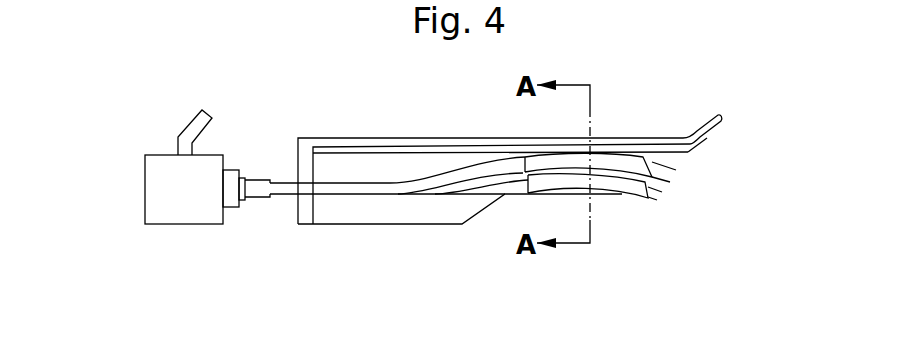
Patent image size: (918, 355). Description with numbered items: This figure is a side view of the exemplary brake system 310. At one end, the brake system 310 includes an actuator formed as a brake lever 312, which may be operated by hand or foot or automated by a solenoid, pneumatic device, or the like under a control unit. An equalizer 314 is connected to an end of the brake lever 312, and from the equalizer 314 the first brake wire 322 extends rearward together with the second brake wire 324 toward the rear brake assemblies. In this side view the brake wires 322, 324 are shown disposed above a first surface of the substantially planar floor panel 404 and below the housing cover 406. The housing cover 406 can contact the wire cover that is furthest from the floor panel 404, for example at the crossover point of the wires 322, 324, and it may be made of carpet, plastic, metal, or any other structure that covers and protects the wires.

The brake system 310 is at (122, 188).
The brake lever 312 is at (200, 197).
The equalizer 314 is at (233, 200).
The floor panel 404 is at (378, 226).
The first brake wire 322 is at (439, 178).
The second brake wire 324 is at (490, 190).
The housing cover 406 is at (707, 138).